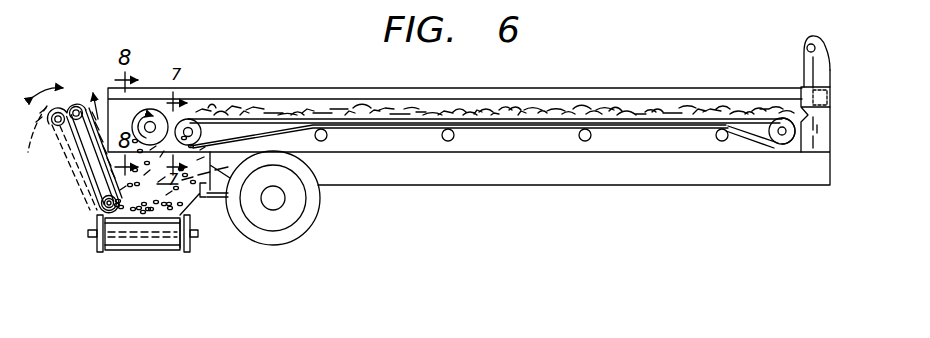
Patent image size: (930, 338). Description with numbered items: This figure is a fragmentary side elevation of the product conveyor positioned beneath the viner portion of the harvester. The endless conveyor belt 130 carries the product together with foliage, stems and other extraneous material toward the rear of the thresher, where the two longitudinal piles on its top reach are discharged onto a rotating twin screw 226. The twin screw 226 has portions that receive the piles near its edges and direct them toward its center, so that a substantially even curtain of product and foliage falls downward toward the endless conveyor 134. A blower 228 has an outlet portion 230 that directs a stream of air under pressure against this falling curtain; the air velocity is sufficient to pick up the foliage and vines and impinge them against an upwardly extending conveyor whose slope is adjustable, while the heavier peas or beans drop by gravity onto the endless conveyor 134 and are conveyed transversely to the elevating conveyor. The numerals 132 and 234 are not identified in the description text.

The endless conveyor belt 130 is at (272, 120).
The feed roller 132 is at (150, 74).
The endless conveyor 134 is at (150, 209).
The twin screw 226 is at (155, 113).
The blower 228 is at (318, 213).
The outlet portion 230 is at (202, 192).
The pickup arm 234 is at (100, 142).